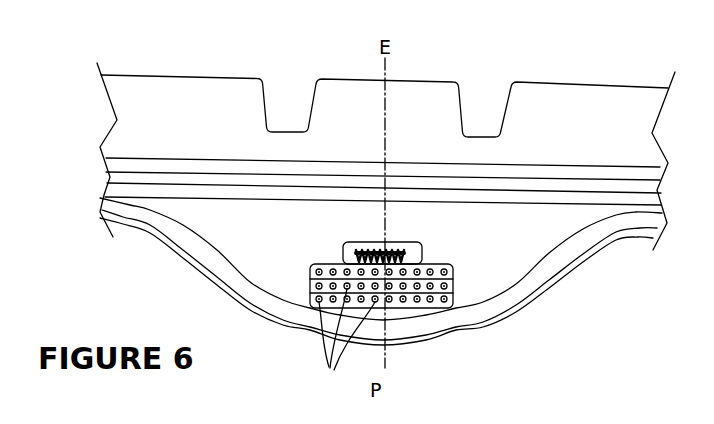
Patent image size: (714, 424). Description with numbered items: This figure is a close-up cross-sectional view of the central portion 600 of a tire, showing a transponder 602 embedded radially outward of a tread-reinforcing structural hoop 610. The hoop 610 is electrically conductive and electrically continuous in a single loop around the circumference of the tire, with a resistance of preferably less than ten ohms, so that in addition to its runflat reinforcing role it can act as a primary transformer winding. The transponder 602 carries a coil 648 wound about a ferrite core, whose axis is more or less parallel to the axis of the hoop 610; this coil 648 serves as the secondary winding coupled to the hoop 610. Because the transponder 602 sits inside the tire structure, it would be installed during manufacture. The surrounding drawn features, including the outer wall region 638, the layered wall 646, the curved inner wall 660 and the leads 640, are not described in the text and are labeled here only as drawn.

The central portion 600 is at (485, 65).
The top wall with grooves 638 is at (187, 90).
The wall layers 646 is at (422, 160).
The curved bottom wall 660 is at (162, 240).
The transponder 602 is at (418, 242).
The coil 648 is at (362, 245).
The tread-reinforcing structural hoop 610 is at (414, 312).
The wires 640 is at (330, 368).